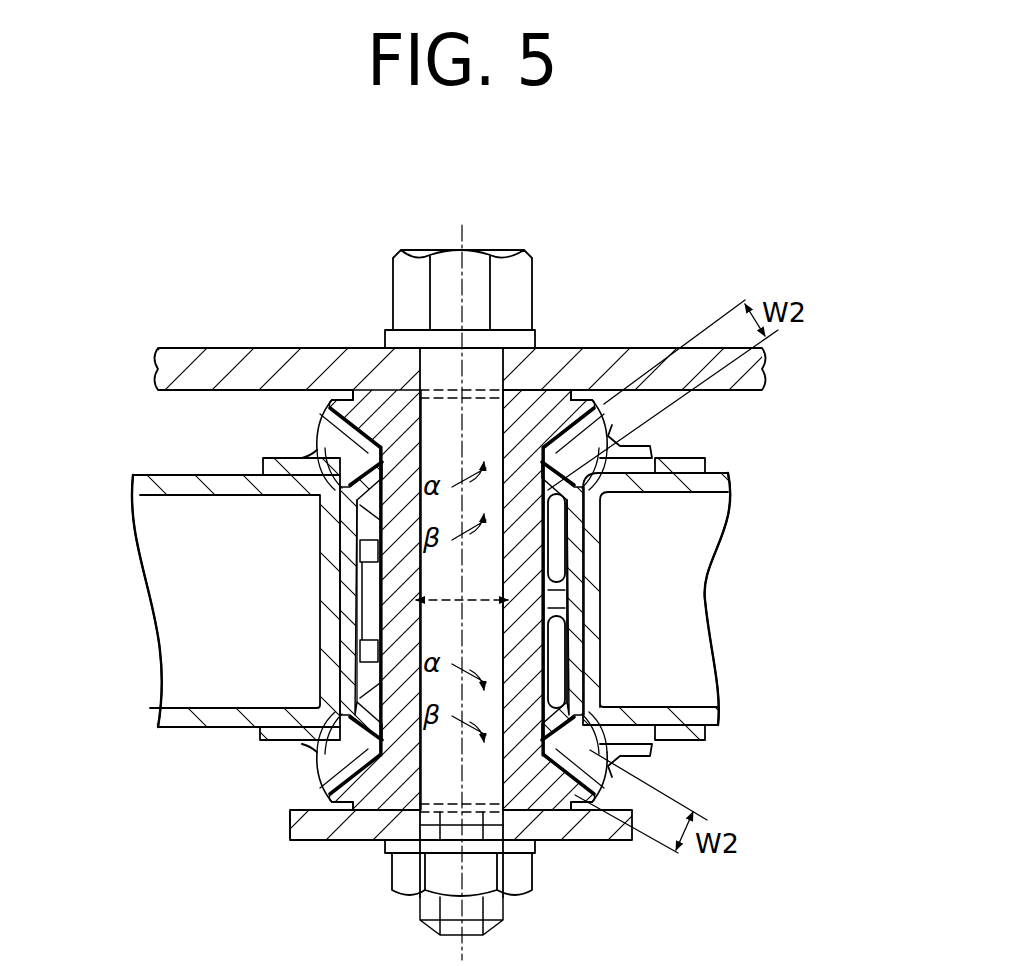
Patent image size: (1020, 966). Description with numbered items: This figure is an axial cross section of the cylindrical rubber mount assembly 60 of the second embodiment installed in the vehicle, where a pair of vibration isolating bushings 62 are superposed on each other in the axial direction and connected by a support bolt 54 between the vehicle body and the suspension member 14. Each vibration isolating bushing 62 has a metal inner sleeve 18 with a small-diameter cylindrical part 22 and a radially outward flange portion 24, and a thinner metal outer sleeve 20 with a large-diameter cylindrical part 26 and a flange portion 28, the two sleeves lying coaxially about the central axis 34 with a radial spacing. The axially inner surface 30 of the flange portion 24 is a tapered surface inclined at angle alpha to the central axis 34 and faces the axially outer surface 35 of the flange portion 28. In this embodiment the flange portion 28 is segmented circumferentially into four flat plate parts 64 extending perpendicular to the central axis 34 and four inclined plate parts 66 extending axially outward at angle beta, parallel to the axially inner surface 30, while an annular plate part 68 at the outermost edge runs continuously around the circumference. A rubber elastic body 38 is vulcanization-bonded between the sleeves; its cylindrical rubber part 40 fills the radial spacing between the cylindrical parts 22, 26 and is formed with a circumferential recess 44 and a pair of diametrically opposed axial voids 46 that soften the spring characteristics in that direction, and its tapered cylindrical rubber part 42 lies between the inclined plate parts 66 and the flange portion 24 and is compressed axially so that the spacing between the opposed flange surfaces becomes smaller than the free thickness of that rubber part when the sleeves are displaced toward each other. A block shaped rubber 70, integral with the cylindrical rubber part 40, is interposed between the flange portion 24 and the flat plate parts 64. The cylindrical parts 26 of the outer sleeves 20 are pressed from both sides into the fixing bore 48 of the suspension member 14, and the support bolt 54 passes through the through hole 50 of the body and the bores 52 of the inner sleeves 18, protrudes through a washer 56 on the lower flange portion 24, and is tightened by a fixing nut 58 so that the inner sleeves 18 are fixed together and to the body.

The suspension member 14 is at (165, 730).
The inner sleeve 18 is at (370, 373).
The outer sleeve 20 is at (590, 557).
The cylindrical part 22 is at (342, 552).
The flange portion 24 is at (530, 398).
The cylindrical part 26 is at (607, 533).
The flange portion 28 is at (300, 448).
The axially inner surface 30 is at (592, 400).
The central axis 34 is at (462, 270).
The axially outer surface 35 is at (600, 445).
The rubber elastic body 38 is at (335, 555).
The cylindrical rubber part 40 is at (345, 505).
The tapered cylindrical rubber part 42 is at (606, 402).
The recess 44 is at (338, 587).
The voids 46 is at (600, 585).
The fixing bore 48 is at (600, 615).
The through hole 50 is at (485, 362).
The bores 52 is at (388, 348).
The support bolt 54 is at (447, 280).
The washer 56 is at (310, 845).
The fixing nut 58 is at (513, 882).
The cylindrical rubber mount assembly 60 is at (250, 393).
The vibration isolating bushings 62 is at (293, 418).
The flat plate parts 64 is at (263, 464).
The inclined plate parts 66 is at (648, 452).
The annular plate part 68 is at (662, 470).
The block shaped rubber 70 is at (267, 447).